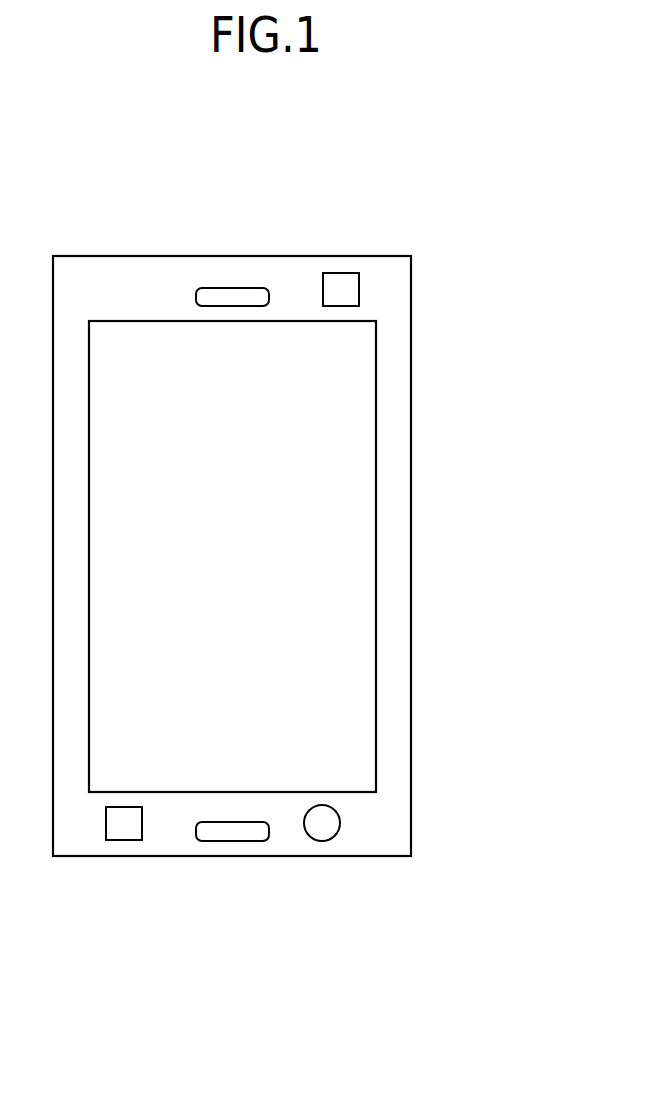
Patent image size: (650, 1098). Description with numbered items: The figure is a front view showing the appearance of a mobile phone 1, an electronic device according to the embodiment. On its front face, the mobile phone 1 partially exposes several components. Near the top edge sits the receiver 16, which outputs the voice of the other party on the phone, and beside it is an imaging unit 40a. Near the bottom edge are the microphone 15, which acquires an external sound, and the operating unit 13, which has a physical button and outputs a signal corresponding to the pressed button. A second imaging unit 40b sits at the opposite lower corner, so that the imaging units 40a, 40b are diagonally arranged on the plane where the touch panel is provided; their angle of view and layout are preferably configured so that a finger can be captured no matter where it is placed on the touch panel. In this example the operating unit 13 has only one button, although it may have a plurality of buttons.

The mobile phone 1 is at (484, 230).
The receiver 16 is at (232, 288).
The imaging unit 40a is at (338, 273).
The imaging unit 40b is at (120, 840).
The microphone 15 is at (231, 841).
The operating unit 13 is at (322, 841).